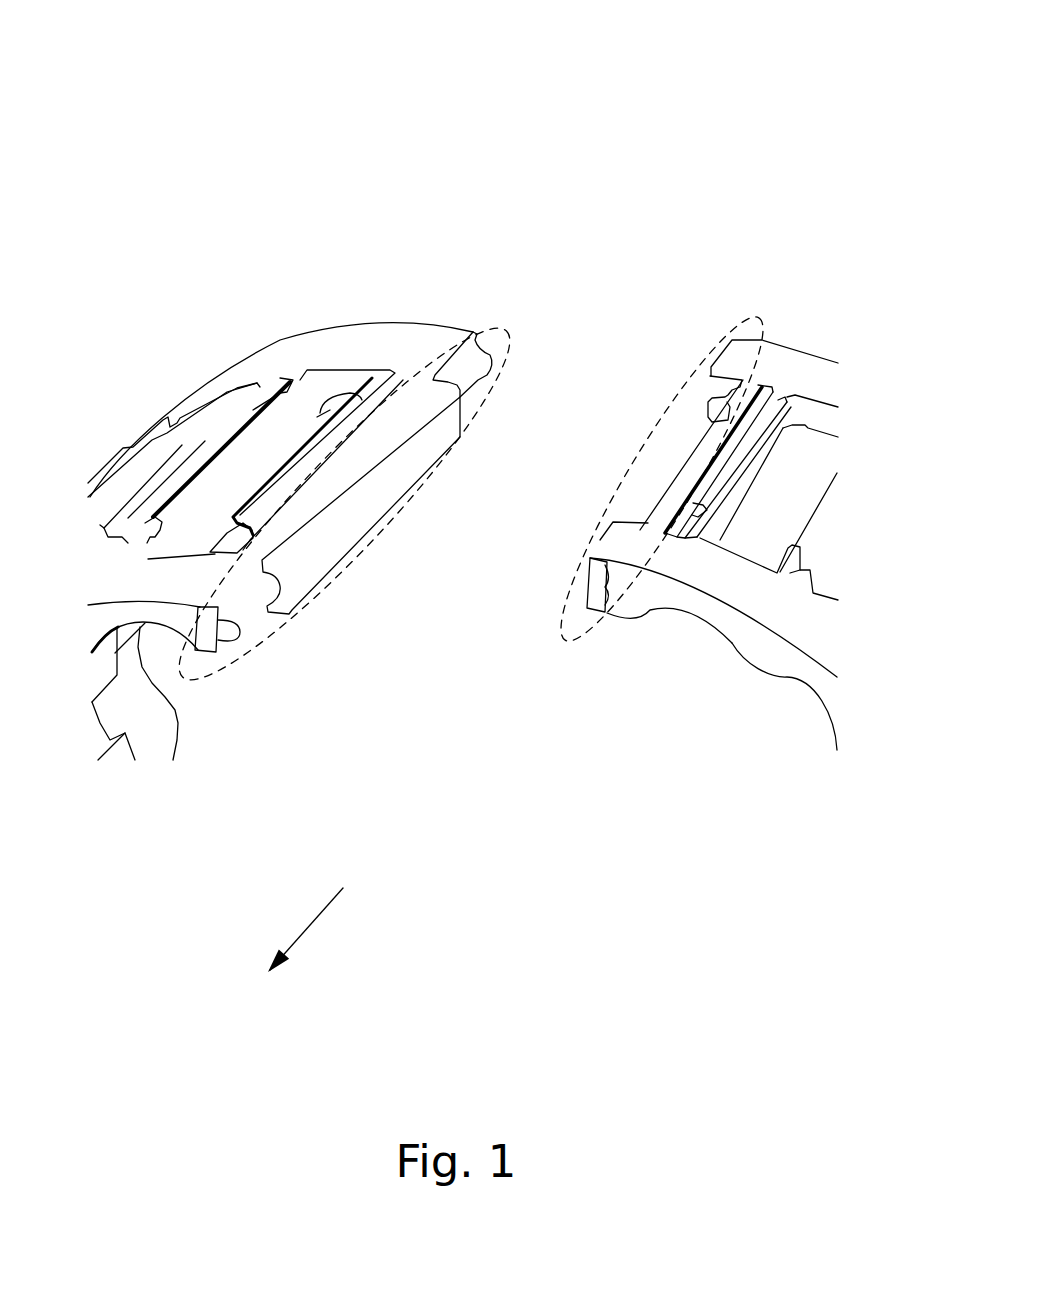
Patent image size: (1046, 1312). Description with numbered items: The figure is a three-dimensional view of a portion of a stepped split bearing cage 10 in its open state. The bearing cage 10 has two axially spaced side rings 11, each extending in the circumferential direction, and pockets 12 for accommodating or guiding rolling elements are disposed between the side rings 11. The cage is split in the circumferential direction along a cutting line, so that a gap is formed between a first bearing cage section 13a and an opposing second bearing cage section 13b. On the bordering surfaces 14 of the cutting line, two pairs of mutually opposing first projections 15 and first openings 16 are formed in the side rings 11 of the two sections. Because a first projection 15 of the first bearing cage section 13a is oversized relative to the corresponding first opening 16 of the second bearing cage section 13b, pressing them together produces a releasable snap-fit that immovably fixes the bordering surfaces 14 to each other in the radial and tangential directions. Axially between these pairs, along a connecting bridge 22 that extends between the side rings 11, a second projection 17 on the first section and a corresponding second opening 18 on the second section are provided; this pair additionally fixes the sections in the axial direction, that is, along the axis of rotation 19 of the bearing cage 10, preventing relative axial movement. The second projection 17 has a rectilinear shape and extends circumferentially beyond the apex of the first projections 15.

The split bearing cage 10 is at (624, 124).
The side ring 11 is at (143, 583).
The pocket 12 is at (256, 445).
The first bearing cage section 13a is at (172, 822).
The second bearing cage section 13b is at (685, 822).
The bordering surface 14 is at (455, 343).
The first projection 15 is at (500, 350).
The first opening 16 is at (707, 398).
The second projection 17 is at (382, 495).
The second opening 18 is at (653, 483).
The axis of rotation 19 is at (323, 913).
The connecting bridge 22 is at (193, 457).